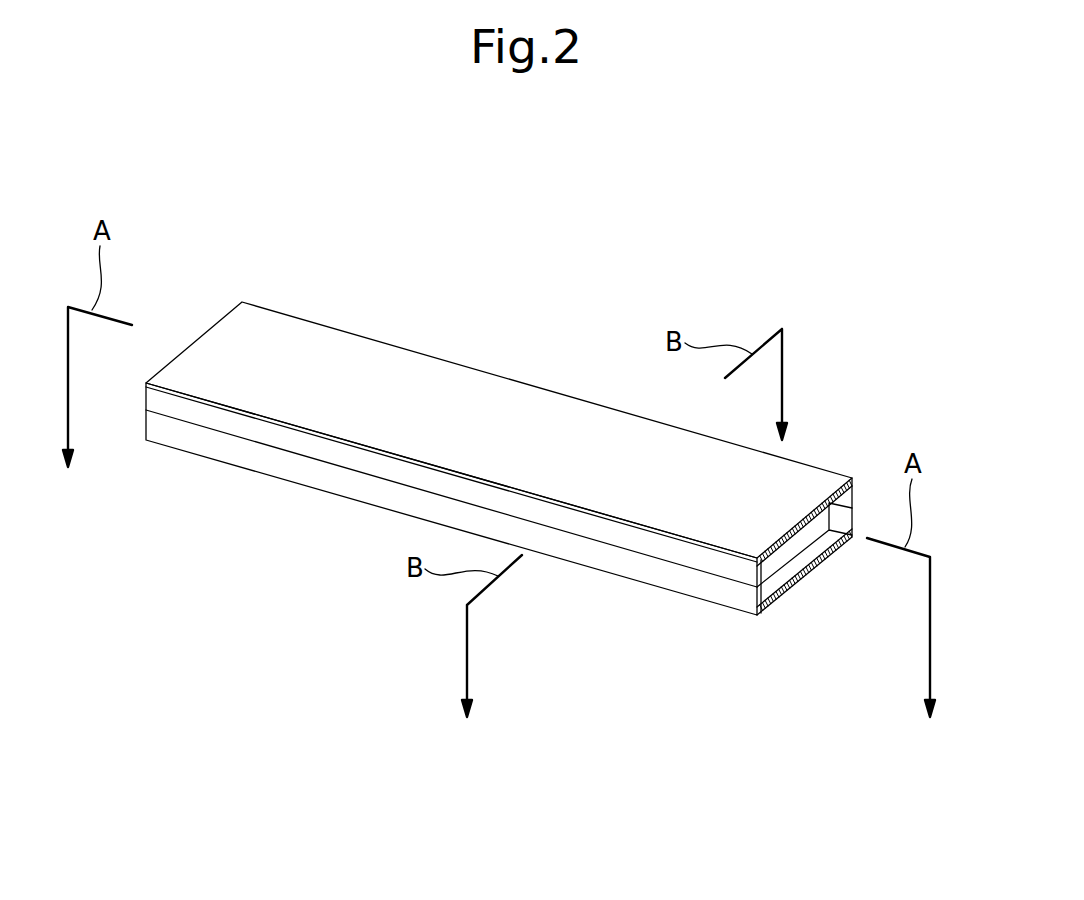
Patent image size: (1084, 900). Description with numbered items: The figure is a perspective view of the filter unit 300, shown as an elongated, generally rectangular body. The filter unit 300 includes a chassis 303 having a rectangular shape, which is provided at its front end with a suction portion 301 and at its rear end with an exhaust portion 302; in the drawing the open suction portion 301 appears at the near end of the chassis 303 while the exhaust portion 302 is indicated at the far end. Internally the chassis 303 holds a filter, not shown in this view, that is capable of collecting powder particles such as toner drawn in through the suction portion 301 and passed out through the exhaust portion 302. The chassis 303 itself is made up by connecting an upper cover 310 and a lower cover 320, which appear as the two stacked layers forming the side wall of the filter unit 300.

The filter unit 300 is at (515, 538).
The suction portion 301 is at (822, 538).
The exhaust portion 302 is at (207, 331).
The chassis 303 is at (451, 487).
The upper cover 310 is at (322, 448).
The lower cover 320 is at (333, 483).